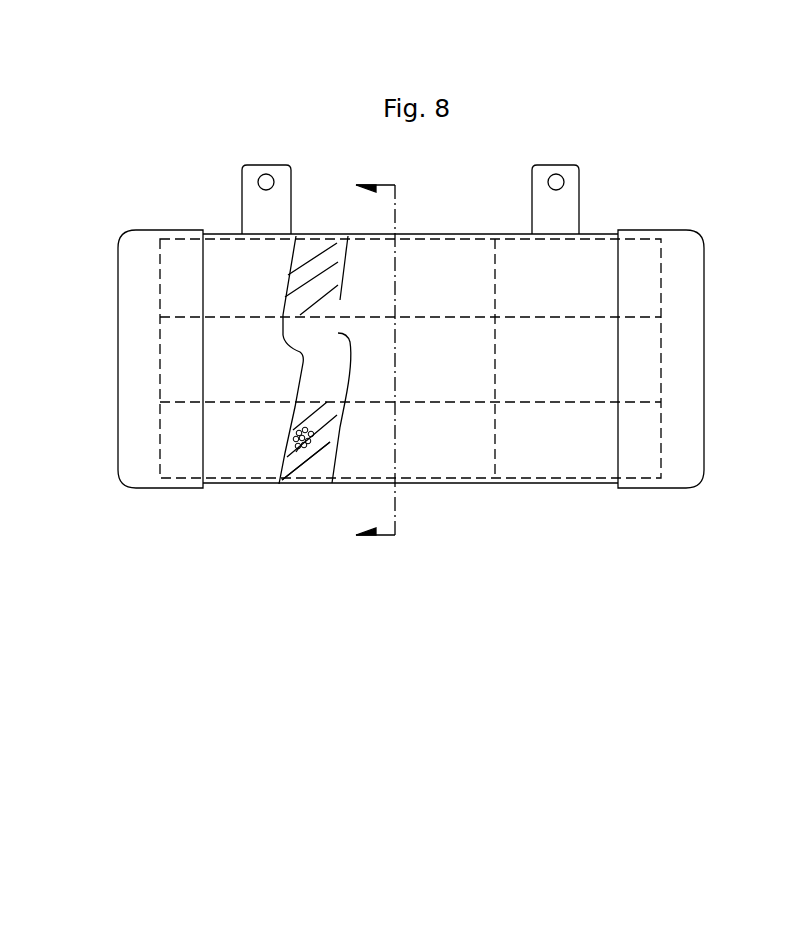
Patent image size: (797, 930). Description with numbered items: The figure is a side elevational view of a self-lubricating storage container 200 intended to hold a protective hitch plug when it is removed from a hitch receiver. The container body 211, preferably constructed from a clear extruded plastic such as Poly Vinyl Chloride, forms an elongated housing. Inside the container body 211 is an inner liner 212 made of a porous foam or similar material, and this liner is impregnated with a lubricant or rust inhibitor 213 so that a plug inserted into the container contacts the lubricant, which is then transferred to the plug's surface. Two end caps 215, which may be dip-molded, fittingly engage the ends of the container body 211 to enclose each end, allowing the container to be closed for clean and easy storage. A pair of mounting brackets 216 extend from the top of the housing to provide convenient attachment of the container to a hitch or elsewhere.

The self-lubricating storage container 200 is at (407, 359).
The container body 211 is at (613, 230).
The inner liner 212 is at (320, 463).
The lubricant or rust inhibitor 213 is at (279, 484).
The end caps 215 is at (146, 230).
The mounting brackets 216 is at (270, 164).